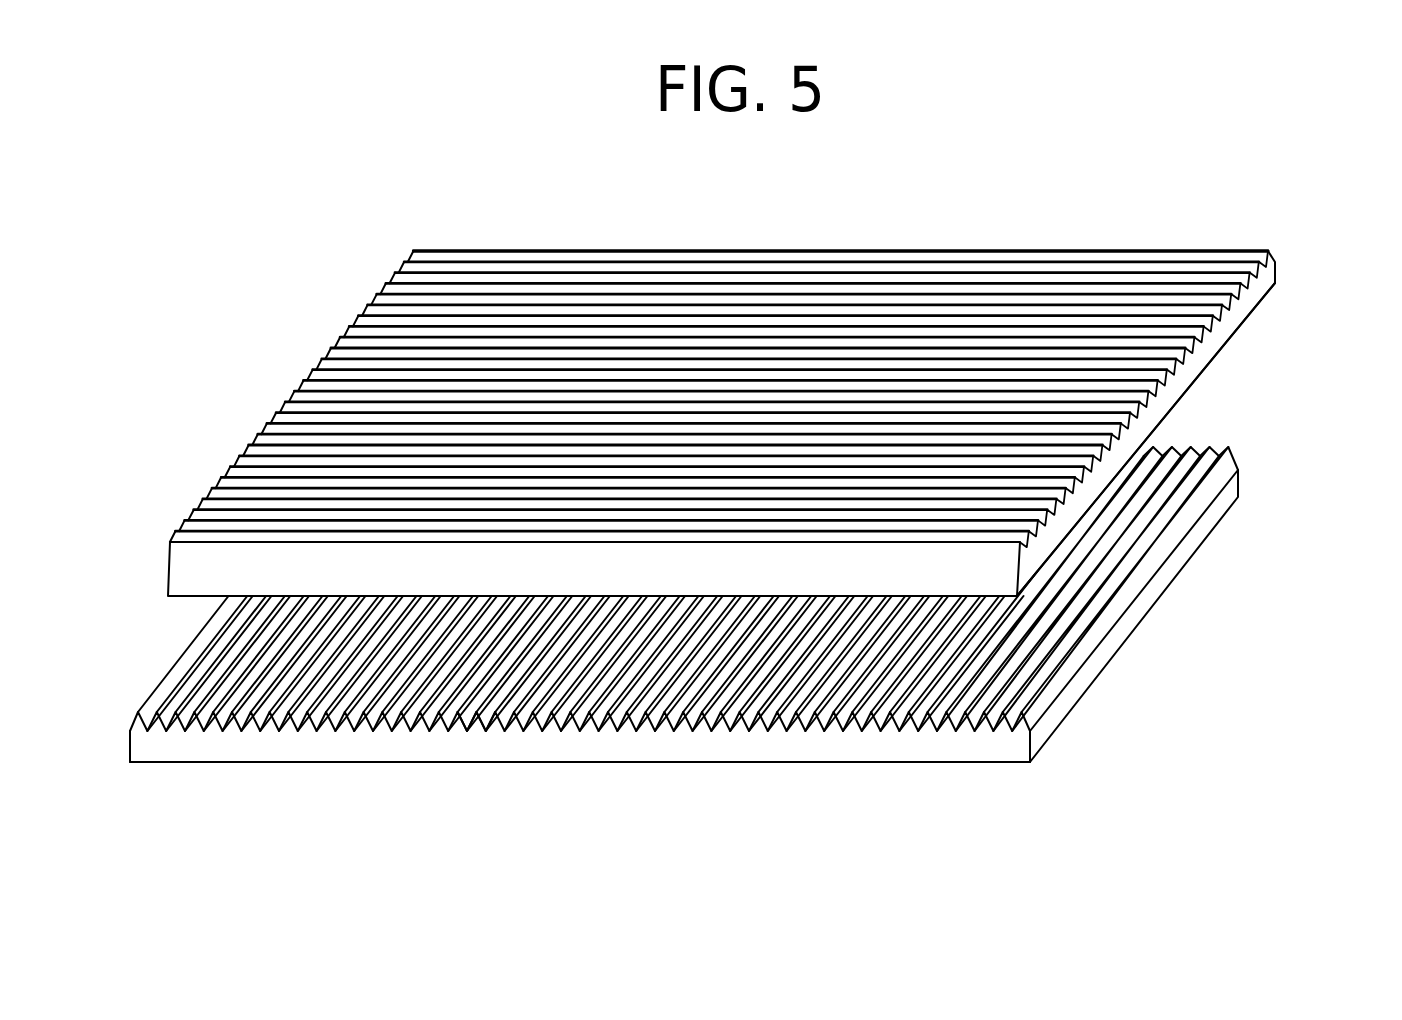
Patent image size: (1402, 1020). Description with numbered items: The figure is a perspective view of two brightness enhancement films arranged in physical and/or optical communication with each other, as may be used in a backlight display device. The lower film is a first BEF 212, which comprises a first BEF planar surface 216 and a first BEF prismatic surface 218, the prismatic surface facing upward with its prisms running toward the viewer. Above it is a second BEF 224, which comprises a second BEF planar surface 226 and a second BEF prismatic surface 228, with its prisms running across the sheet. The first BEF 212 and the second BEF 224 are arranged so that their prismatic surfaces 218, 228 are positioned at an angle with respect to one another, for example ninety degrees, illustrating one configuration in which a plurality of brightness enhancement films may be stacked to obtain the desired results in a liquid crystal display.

The first BEF 212 is at (116, 698).
The first BEF planar surface 216 is at (320, 762).
The first BEF prismatic surface 218 is at (477, 714).
The second BEF 224 is at (292, 356).
The second BEF planar surface 226 is at (1238, 340).
The second BEF prismatic surface 228 is at (1245, 260).